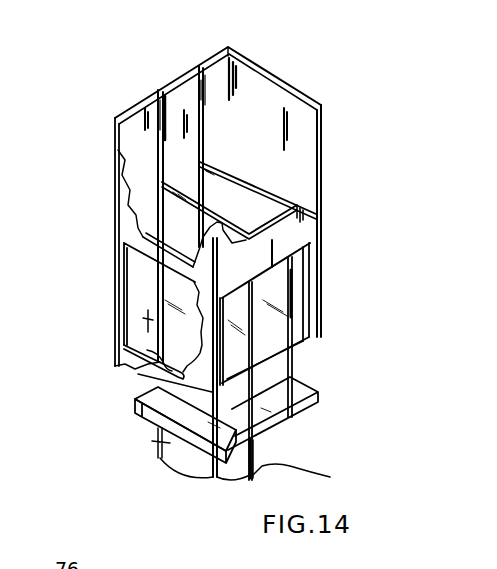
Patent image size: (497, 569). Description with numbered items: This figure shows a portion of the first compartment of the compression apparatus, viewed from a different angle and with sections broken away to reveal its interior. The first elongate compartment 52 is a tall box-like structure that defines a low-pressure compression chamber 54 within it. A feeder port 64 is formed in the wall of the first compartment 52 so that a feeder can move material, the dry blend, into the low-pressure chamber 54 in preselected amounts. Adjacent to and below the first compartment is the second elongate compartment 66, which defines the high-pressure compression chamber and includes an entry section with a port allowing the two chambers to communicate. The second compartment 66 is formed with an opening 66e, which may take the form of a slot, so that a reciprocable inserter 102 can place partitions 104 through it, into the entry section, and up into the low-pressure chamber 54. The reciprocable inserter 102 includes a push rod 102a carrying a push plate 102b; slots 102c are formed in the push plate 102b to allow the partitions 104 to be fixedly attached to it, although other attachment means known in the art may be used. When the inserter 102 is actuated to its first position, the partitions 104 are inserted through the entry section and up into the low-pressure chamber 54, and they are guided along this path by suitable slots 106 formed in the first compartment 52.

The first elongate compartment 52 is at (321, 158).
The low-pressure compression chamber 54 is at (267, 109).
The feeder port 64 is at (292, 291).
The second elongate compartment 66 is at (147, 352).
The opening 66e is at (170, 356).
The reciprocable inserter 102 is at (146, 424).
The push rod 102a is at (158, 442).
The push plate 102b is at (303, 400).
The slots 102c is at (276, 407).
The partitions 104 is at (203, 212).
The slots 106 is at (200, 67).